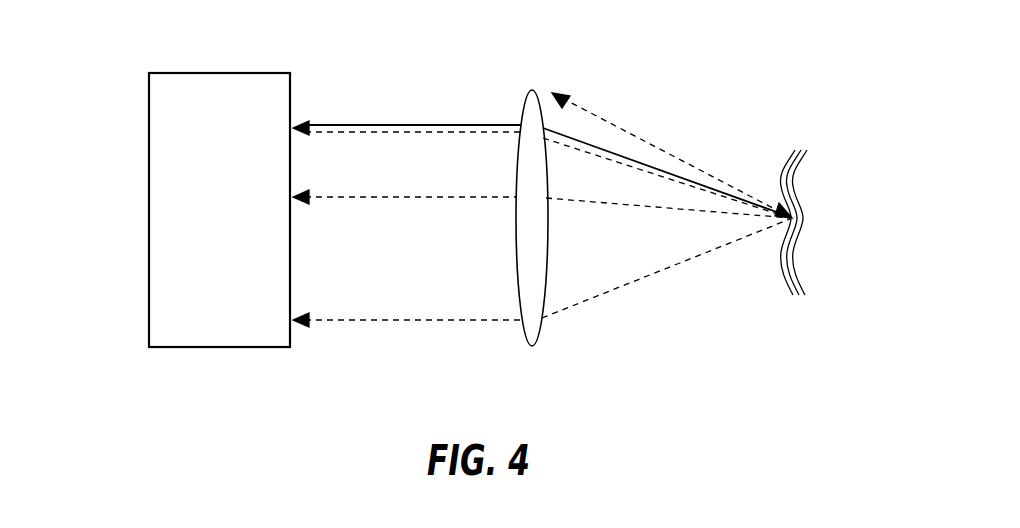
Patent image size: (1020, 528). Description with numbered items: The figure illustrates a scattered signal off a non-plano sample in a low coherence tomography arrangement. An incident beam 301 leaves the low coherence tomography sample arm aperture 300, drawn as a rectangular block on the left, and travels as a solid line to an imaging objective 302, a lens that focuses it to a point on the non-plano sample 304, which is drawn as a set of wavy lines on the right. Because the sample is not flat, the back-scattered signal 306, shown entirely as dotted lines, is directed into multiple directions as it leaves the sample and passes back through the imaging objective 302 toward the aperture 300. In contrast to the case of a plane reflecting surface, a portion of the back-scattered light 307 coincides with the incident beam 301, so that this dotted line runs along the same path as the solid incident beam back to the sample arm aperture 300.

The low coherence tomography sample arm aperture 300 is at (166, 196).
The incident beam 301 is at (348, 124).
The imaging objective 302 is at (535, 90).
The non-plano sample 304 is at (804, 188).
The back-scattered signal 306 is at (628, 294).
The portion of the back-scattered light 307 is at (430, 113).